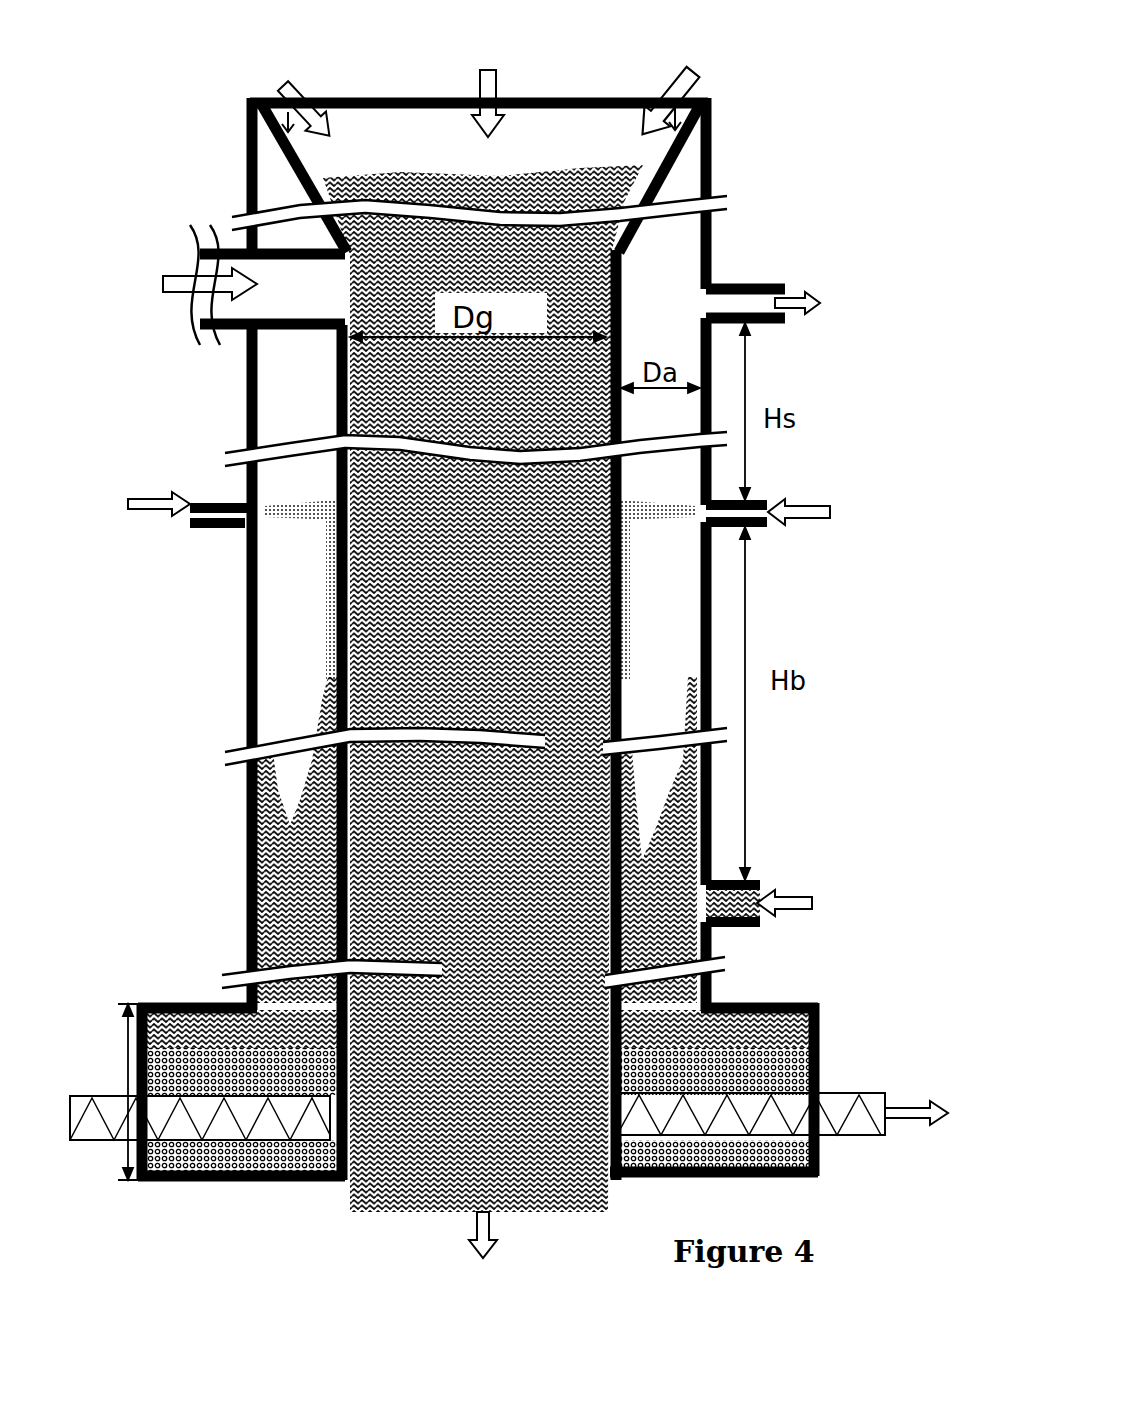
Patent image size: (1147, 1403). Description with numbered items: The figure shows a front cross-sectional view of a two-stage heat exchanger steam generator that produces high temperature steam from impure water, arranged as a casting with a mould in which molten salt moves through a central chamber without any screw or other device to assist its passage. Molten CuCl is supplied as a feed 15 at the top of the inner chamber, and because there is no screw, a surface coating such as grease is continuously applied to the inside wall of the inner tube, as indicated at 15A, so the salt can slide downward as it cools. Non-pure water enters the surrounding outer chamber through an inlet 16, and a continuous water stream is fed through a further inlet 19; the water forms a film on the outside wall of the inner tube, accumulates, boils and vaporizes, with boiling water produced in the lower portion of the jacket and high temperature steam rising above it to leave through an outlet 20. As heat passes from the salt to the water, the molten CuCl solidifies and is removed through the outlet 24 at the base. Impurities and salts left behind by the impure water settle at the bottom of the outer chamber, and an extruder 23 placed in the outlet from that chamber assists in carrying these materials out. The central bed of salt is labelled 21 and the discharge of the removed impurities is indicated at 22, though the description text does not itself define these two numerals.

The feed of molten CuCl 15 is at (172, 610).
The lubricant application 15A is at (283, 110).
The inlet 16 is at (798, 517).
The inlet 19 is at (787, 893).
The outlet 20 is at (802, 296).
The fuel bed 21 is at (380, 860).
The ash discharge 22 is at (905, 1110).
The extruder 23 is at (840, 1093).
The outlet 24 is at (484, 1258).